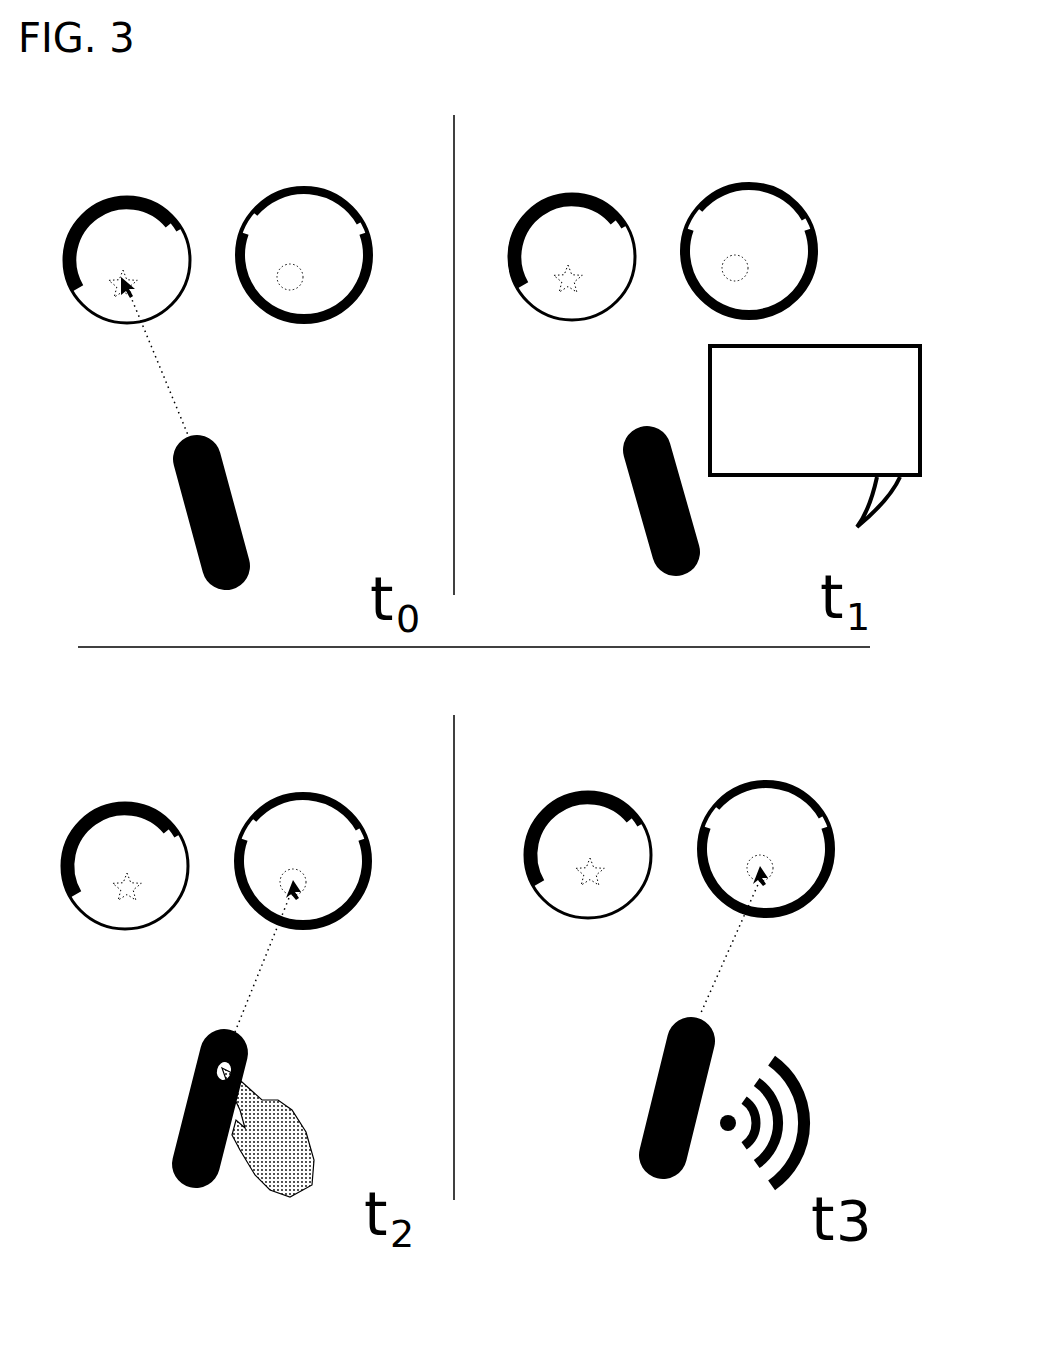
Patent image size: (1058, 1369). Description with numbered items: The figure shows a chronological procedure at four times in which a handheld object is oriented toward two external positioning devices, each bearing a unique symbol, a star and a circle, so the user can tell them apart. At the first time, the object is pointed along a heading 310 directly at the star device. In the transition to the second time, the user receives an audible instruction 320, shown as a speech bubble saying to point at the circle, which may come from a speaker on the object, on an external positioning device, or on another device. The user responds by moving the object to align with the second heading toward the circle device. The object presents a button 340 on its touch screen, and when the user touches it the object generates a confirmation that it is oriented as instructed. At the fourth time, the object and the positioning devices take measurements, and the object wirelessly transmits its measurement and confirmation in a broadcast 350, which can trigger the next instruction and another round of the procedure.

The heading 310 is at (164, 356).
The audible instruction 320 is at (840, 346).
The button 340 is at (223, 1040).
The broadcast 350 is at (858, 1093).